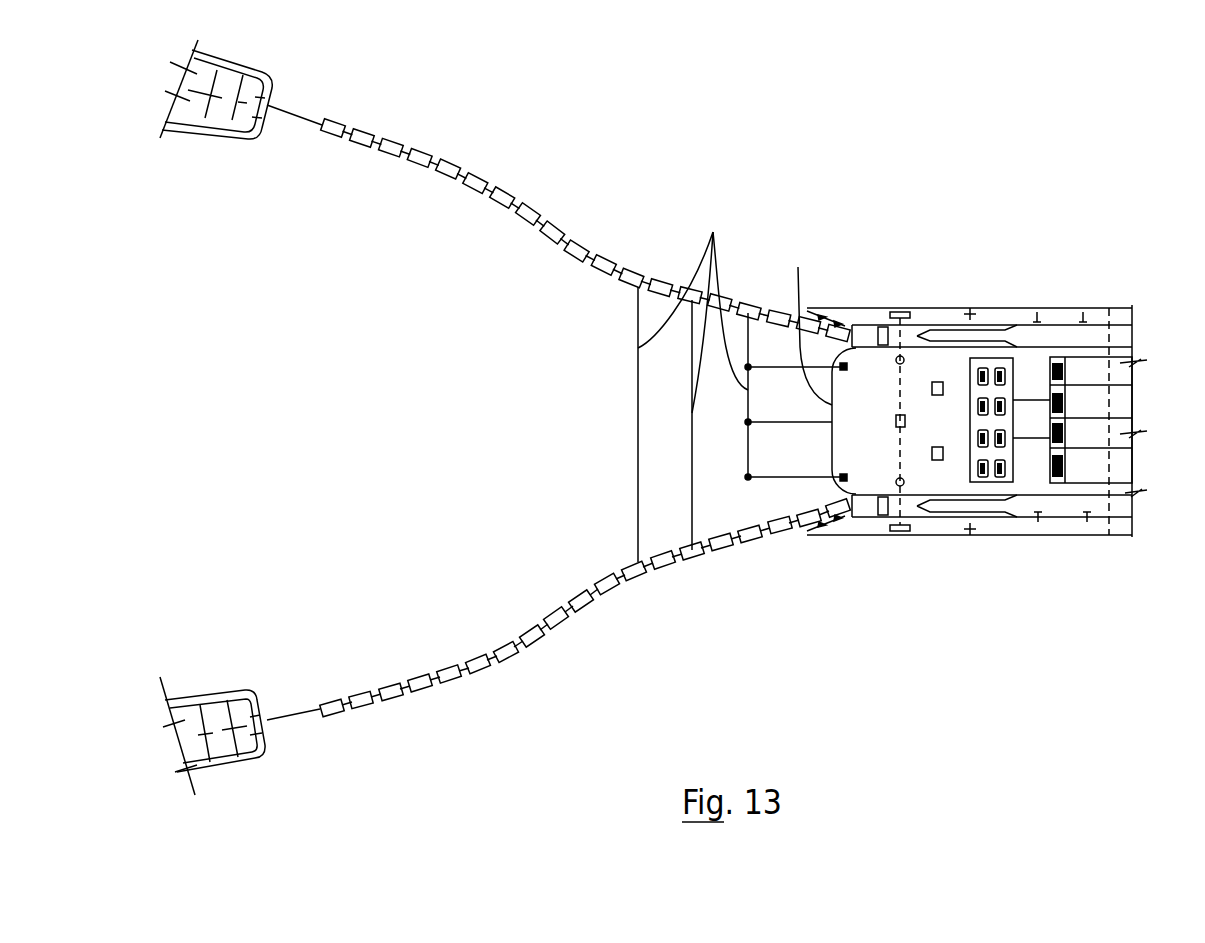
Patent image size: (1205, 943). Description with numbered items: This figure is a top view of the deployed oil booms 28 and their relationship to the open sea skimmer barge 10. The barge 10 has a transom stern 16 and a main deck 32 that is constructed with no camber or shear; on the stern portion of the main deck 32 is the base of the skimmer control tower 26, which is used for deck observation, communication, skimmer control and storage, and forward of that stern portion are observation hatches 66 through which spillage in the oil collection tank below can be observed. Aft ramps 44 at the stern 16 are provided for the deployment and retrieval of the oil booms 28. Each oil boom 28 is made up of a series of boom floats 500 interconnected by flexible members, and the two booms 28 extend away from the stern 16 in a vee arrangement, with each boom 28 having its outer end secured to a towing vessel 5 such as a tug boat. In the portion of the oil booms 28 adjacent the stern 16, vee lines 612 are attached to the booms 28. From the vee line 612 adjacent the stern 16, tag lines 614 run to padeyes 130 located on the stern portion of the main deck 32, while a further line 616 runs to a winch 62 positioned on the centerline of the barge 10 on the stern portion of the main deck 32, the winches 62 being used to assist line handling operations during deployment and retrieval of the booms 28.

The towing vessel 5 is at (217, 118).
The open sea skimmer barge 10 is at (1075, 312).
The transom stern 16 is at (811, 324).
The skimmer control tower 26 is at (1033, 428).
The oil boom 28 is at (554, 230).
The main deck 32 is at (918, 366).
The aft ramp 44 is at (1025, 322).
The winch 62 is at (938, 382).
The observation hatch 66 is at (1000, 368).
The padeye 130 is at (844, 363).
The boom float 500 is at (662, 283).
The vee line 612 is at (713, 233).
The tag line 614 is at (777, 367).
The line 616 is at (772, 423).